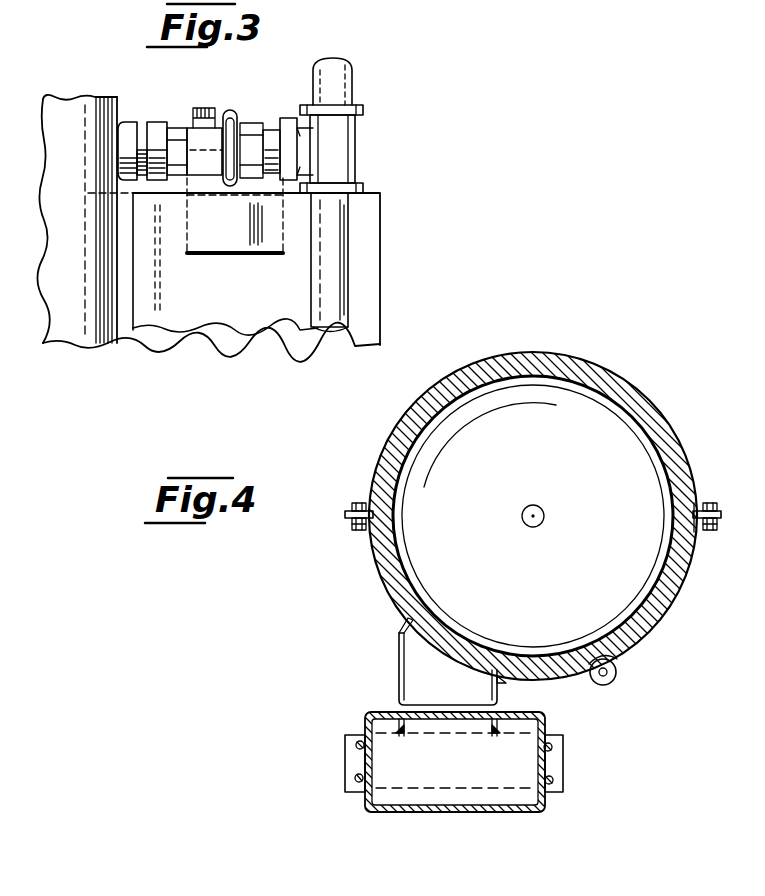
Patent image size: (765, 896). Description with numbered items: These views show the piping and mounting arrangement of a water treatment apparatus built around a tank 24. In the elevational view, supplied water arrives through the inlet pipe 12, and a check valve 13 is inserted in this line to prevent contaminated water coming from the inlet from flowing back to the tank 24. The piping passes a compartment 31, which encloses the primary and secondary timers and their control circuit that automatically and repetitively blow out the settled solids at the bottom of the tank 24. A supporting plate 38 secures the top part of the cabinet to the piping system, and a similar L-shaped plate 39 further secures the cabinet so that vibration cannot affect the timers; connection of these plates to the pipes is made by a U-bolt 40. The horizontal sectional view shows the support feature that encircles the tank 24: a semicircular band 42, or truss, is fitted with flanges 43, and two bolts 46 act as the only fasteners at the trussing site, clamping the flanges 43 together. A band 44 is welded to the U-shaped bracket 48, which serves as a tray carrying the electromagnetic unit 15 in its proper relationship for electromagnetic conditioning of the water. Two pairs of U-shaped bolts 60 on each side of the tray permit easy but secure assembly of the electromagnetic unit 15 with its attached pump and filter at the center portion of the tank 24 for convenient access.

In FIG. 3, the inlet pipe 12 is at (347, 80).
In FIG. 3, the check valve 13 is at (201, 111).
In FIG. 4, the electromagnetic unit 15 is at (379, 704).
In FIG. 3, the tank 24 is at (76, 112).
In FIG. 4, the tank 24 is at (478, 485).
In FIG. 3, the compartment 31 is at (381, 284).
In FIG. 3, the supporting plate 38 is at (256, 246).
In FIG. 3, the plate 39 is at (232, 302).
In FIG. 3, the U-bolt 40 is at (227, 172).
In FIG. 4, the semicircular band 42 is at (460, 369).
In FIG. 4, the flanges 43 is at (349, 508).
In FIG. 4, the band 44 is at (648, 634).
In FIG. 4, the bolts 46 is at (357, 531).
In FIG. 4, the U-shaped bracket 48 is at (398, 651).
In FIG. 4, the U-shaped bolts 60 is at (357, 741).